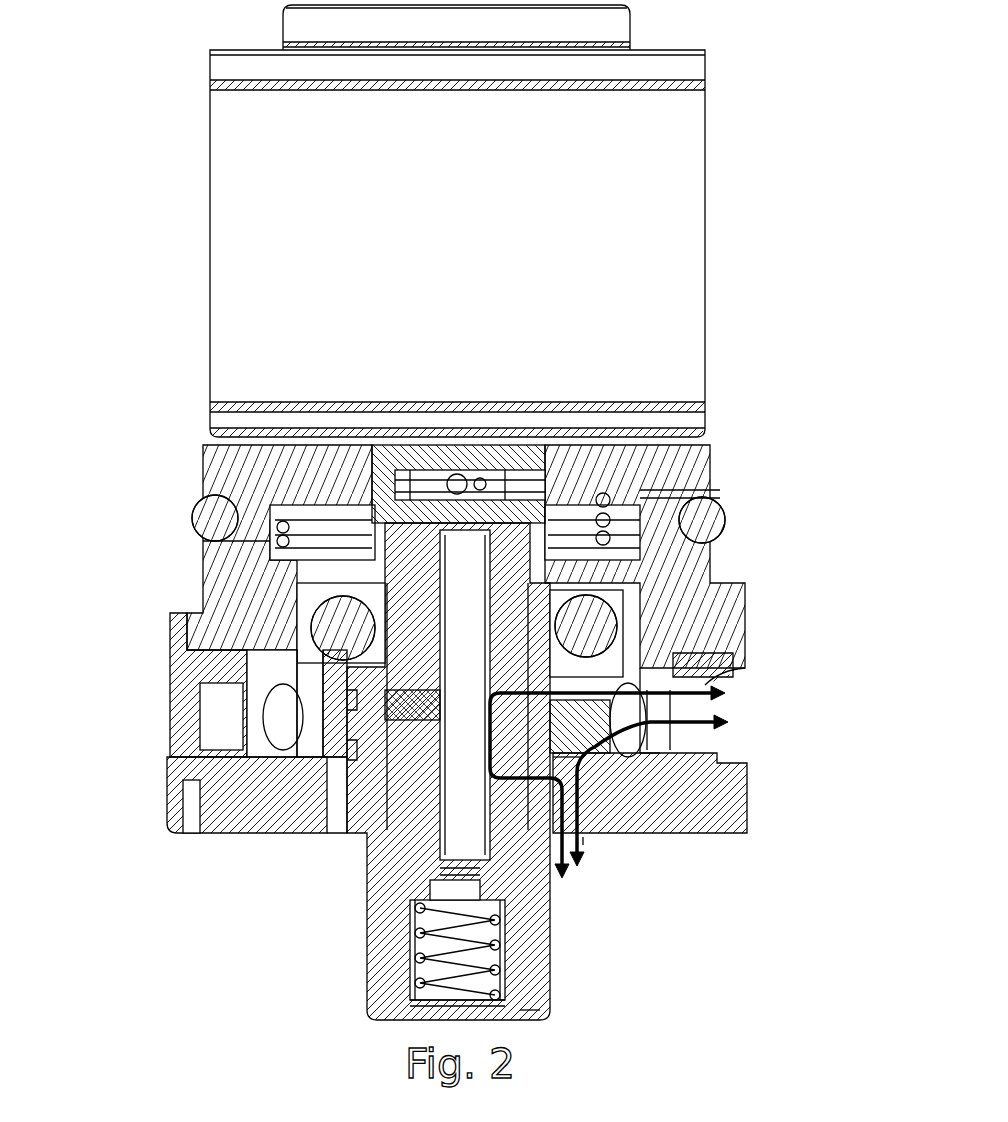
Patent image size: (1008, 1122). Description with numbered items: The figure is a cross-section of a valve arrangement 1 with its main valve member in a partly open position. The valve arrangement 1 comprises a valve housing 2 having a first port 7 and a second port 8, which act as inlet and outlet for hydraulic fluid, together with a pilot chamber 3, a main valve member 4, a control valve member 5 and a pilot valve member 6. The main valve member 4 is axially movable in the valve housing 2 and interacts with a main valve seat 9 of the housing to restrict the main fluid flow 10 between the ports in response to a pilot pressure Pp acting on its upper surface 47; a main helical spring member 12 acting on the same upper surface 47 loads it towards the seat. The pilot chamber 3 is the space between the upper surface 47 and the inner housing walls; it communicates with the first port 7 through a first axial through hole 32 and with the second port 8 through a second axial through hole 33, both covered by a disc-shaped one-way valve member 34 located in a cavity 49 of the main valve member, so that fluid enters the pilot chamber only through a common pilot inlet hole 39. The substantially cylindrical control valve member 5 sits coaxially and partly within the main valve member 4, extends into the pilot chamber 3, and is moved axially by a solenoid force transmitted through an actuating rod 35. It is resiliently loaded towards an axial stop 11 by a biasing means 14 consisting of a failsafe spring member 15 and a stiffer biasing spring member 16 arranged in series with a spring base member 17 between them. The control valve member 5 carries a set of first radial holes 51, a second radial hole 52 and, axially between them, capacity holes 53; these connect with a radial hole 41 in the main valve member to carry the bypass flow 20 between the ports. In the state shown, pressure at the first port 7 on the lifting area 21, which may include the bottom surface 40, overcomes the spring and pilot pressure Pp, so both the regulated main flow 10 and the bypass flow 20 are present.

The valve arrangement 1 is at (112, 414).
The valve housing 2 is at (172, 832).
The pilot chamber 3 is at (292, 540).
The main valve member 4 is at (293, 653).
The control valve member 5 is at (370, 882).
The pilot valve member 6 is at (370, 846).
The first port 7 is at (583, 837).
The second port 8 is at (743, 732).
The main valve seat 9 is at (640, 755).
The main fluid flow 10 is at (728, 698).
The axial stop 11 is at (615, 448).
The main helical spring member 12 is at (312, 526).
The biasing means 14 is at (290, 1008).
The failsafe spring member 15 is at (420, 1000).
The biasing spring member 16 is at (410, 900).
The spring base member 17 is at (420, 950).
The bypass flow 20 is at (580, 670).
The lifting area 21 is at (302, 752).
The first axial through hole 32 is at (338, 705).
The second axial through hole 33 is at (705, 652).
The one-way valve member 34 is at (700, 565).
The actuating rod 35 is at (433, 493).
The pilot inlet hole 39 is at (600, 562).
The bottom surface 40 is at (528, 1020).
The radial hole 41 is at (573, 703).
The upper surface 47 is at (722, 515).
The cavity 49 is at (297, 597).
The first radial holes 51 is at (390, 705).
The second radial hole 52 is at (583, 727).
The third set of radial holes 53 is at (310, 728).
The pilot pressure Pp is at (702, 492).